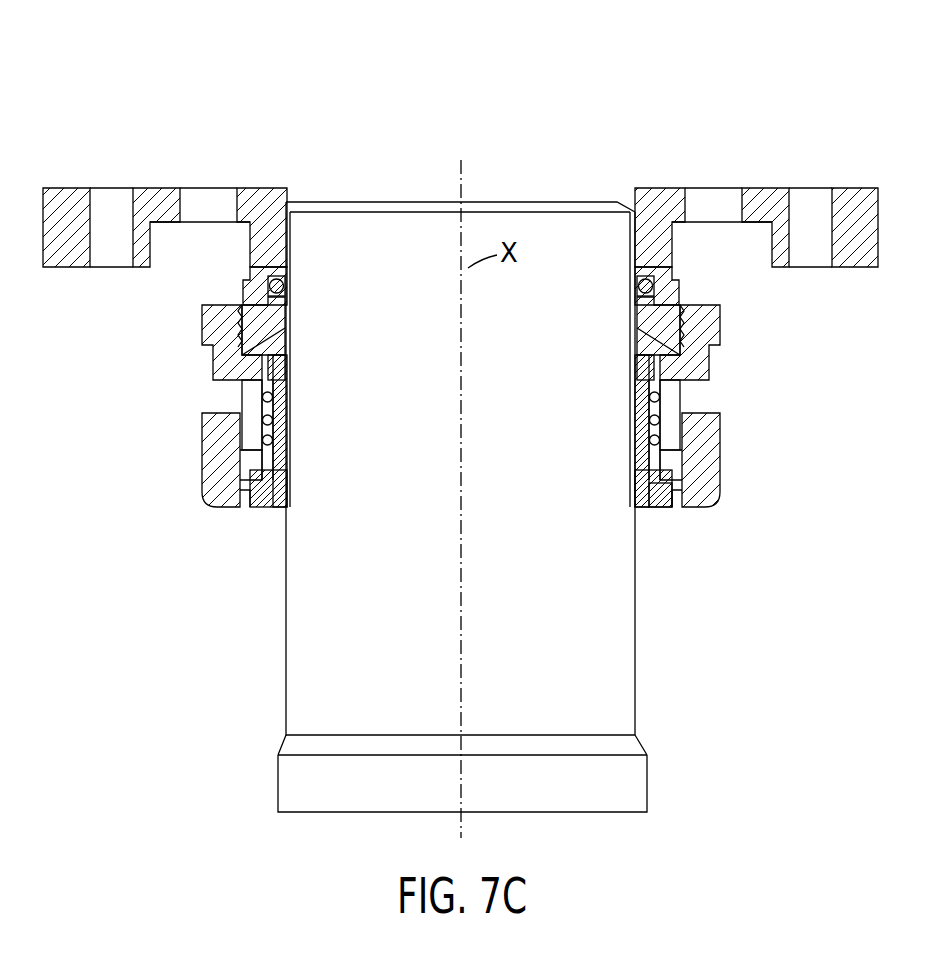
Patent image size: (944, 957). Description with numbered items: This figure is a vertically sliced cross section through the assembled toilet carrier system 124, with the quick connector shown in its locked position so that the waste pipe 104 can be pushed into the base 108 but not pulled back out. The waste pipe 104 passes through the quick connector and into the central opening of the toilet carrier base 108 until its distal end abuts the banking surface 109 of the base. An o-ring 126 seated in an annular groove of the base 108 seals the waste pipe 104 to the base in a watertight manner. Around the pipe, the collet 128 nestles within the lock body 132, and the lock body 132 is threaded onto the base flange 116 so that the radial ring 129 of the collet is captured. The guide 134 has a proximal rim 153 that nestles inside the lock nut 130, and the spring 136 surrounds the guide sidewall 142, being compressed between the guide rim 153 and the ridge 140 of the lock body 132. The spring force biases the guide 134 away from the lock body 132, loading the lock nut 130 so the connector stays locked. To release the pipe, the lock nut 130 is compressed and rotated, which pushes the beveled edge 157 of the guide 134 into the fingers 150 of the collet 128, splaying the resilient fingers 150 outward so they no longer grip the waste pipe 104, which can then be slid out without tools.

The waste pipe 104 is at (636, 616).
The toilet carrier base 108 is at (852, 192).
The banking surface 109 is at (632, 208).
The base flange 116 is at (243, 282).
The toilet carrier system 124 is at (236, 98).
The o-ring 126 is at (285, 287).
The collet 128 is at (233, 343).
The radial ring 129 is at (716, 330).
The lock nut 130 is at (202, 455).
The lock body 132 is at (202, 340).
The guide 134 is at (286, 475).
The spring 136 is at (287, 378).
The ridge 140 is at (255, 382).
The guide sidewall 142 is at (272, 432).
The fingers 150 is at (672, 300).
The proximal rim 153 is at (660, 503).
The beveled edge 157 is at (286, 360).